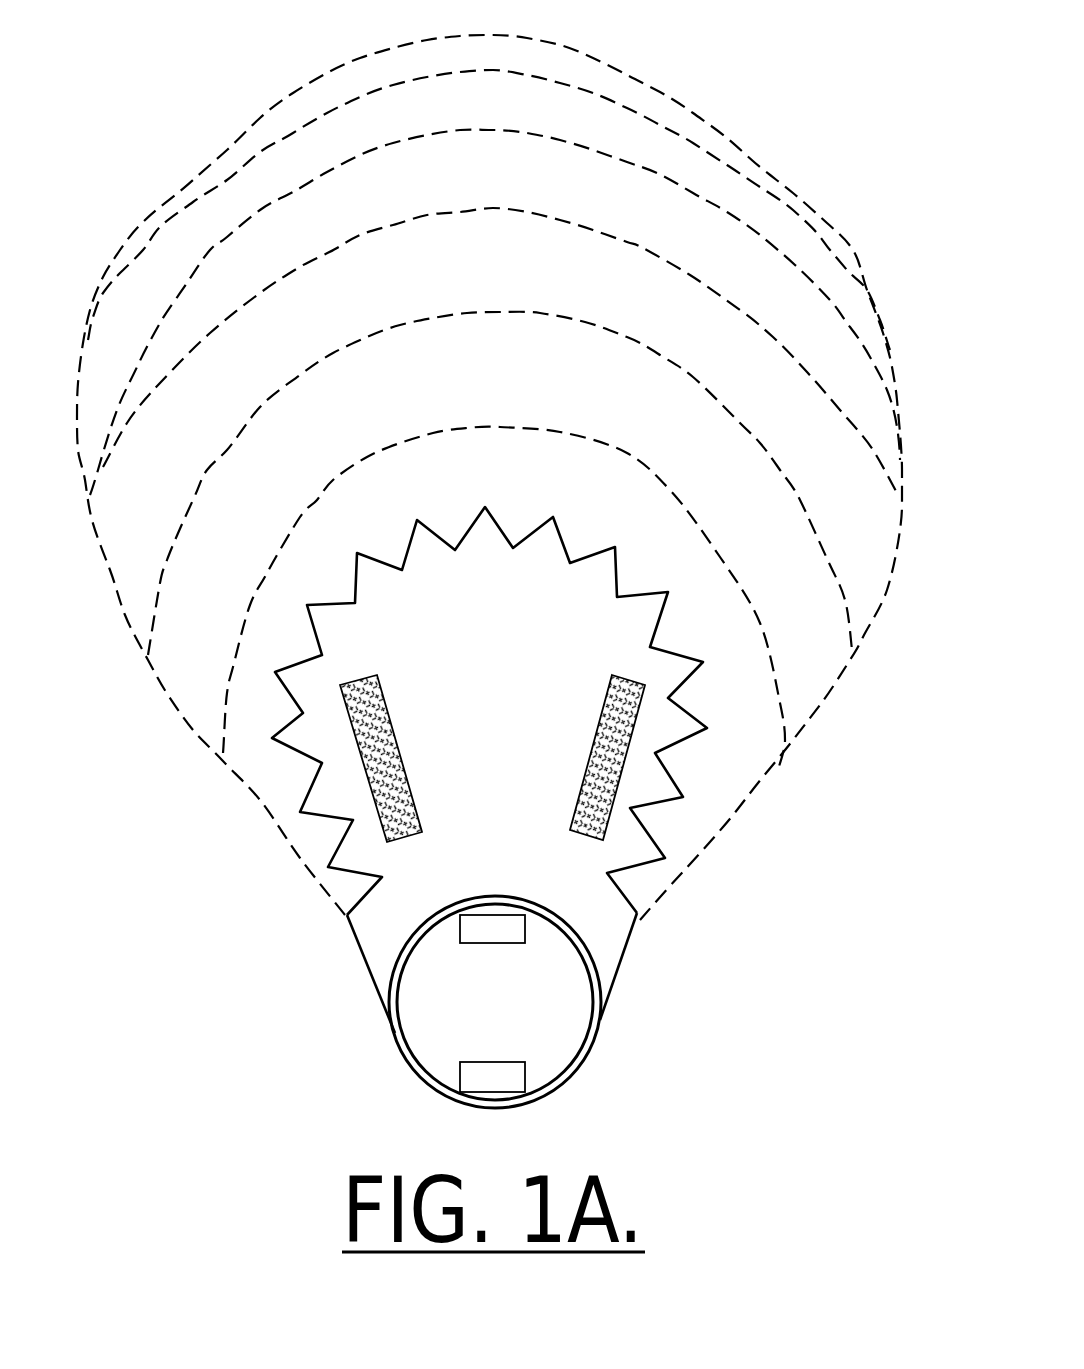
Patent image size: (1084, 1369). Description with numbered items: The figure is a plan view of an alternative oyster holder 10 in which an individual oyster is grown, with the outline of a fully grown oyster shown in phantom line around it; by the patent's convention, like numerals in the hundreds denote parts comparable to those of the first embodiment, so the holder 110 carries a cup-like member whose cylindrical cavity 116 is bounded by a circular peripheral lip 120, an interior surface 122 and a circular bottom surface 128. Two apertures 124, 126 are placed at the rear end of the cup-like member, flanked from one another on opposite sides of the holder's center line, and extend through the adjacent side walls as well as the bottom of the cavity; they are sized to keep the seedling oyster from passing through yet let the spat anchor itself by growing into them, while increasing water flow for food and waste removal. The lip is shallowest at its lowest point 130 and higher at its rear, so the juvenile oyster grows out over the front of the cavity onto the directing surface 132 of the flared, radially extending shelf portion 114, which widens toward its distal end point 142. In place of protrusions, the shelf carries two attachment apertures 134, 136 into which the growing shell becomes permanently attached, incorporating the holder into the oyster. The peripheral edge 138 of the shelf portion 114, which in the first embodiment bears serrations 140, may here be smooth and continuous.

The holder 10 is at (684, 110).
The expandable member 110 is at (720, 583).
The shelf portion 114 is at (418, 653).
The left retaining hook 116 is at (400, 1031).
The ring 120 is at (587, 958).
The right retaining hook 122 is at (573, 1047).
The aperture 124 is at (478, 1088).
The aperture 126 is at (550, 1062).
The ring interior 128 is at (422, 972).
The upper tab 130 is at (493, 907).
The serrated body wall 132 is at (303, 810).
The aperture 134 is at (612, 737).
The aperture 136 is at (377, 737).
The side wall 138 is at (630, 940).
The insulating region 140 is at (437, 782).
The body surface 142 is at (542, 522).